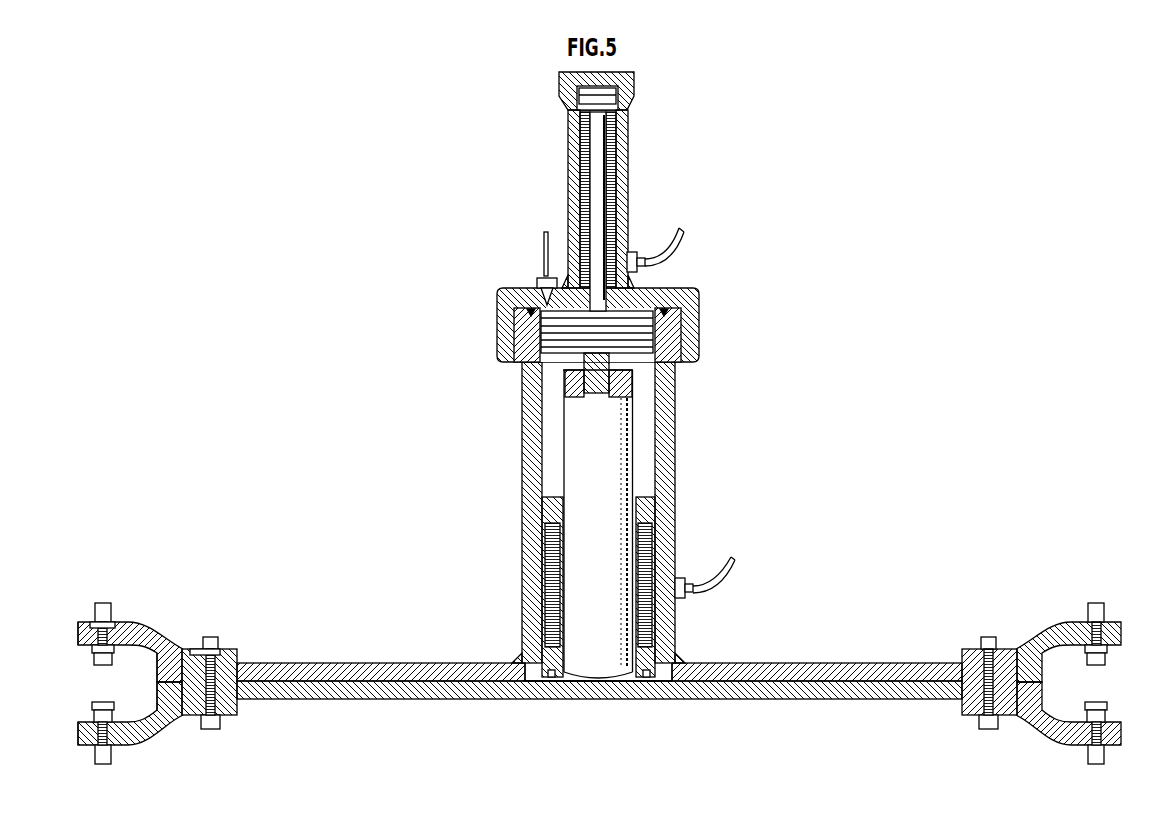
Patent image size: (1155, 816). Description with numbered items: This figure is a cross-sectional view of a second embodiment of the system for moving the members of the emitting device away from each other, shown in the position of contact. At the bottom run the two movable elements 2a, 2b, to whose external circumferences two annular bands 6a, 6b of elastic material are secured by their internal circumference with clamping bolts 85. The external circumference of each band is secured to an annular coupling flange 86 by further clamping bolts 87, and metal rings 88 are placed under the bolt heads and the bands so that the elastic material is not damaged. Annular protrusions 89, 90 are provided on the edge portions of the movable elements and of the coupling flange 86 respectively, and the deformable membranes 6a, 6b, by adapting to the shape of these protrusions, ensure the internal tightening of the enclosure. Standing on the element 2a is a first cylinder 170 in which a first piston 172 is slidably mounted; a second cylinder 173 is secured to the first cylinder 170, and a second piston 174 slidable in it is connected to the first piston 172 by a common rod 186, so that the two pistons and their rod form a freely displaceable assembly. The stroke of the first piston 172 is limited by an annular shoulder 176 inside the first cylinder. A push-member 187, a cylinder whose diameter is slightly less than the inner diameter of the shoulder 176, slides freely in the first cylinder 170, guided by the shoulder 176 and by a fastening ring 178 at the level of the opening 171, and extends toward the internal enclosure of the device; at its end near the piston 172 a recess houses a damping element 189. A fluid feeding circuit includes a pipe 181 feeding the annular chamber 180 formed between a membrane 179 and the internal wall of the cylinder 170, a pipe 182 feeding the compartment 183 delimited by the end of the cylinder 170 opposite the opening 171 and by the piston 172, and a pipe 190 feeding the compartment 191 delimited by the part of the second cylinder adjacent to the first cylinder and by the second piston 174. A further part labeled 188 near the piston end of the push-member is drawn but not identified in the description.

The movable element 2a is at (831, 663).
The movable element 2b is at (833, 699).
The annular band of elastic material 6a is at (160, 649).
The annular band of elastic material 6b is at (173, 722).
The clamping bolts 85 is at (210, 637).
The annular coupling flange 86 is at (153, 679).
The clamping bolts 87 is at (103, 603).
The metal rings 88 is at (120, 622).
The annular protrusion 89 is at (230, 649).
The annular protrusion 90 is at (83, 622).
The first cylinder 170 is at (525, 417).
The opening 171 is at (631, 680).
The first piston 172 is at (560, 335).
The second cylinder 173 is at (628, 138).
The second piston 174 is at (605, 97).
The annular shoulder 176 is at (555, 498).
The fastening ring 178 is at (520, 645).
The membrane 179 is at (524, 576).
The annular chamber 180 is at (660, 622).
The pipe 181 is at (693, 578).
The pipe 182 is at (543, 275).
The compartment 183 is at (525, 311).
The common rod 186 is at (592, 166).
The push-member 187 is at (603, 430).
The piston rod end 188 is at (563, 380).
The damping element 189 is at (583, 368).
The pipe 190 is at (681, 231).
The compartment 191 is at (618, 176).